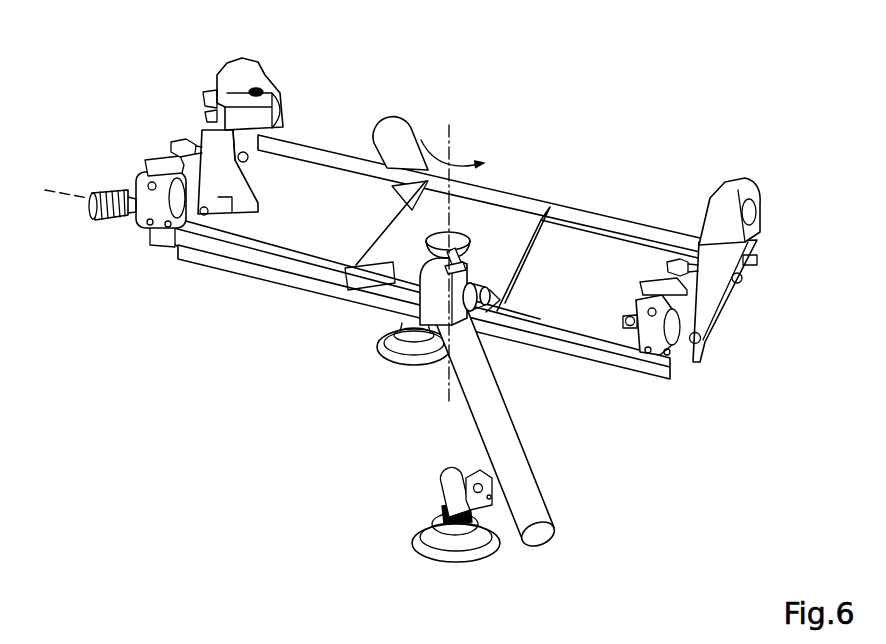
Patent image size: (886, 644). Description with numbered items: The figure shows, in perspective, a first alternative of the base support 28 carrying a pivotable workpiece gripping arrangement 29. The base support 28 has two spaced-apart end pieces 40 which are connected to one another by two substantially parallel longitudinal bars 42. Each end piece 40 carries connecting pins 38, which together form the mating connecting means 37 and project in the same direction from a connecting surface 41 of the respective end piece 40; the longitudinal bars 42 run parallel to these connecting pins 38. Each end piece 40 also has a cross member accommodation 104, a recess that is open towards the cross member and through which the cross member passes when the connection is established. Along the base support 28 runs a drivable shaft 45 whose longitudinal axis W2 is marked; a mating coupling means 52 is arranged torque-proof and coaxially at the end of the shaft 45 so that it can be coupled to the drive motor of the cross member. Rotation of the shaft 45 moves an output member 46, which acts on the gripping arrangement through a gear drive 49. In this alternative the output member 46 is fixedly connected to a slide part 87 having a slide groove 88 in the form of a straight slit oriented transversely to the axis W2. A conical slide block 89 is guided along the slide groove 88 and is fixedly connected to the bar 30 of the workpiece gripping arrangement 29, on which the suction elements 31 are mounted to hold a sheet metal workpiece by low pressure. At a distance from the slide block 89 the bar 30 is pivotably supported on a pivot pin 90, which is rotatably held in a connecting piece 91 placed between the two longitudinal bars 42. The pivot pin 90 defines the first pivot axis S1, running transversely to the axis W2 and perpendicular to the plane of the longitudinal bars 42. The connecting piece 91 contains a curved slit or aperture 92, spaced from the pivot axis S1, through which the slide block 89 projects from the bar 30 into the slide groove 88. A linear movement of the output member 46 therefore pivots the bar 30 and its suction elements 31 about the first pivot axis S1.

The base support 28 is at (740, 135).
The workpiece gripping arrangement 29 is at (512, 567).
The bar 30 is at (512, 438).
The suction elements 31 is at (380, 340).
The mating connecting means 37 is at (97, 113).
The connecting pins 38 is at (130, 193).
The end pieces 40 is at (243, 71).
The connecting surface 41 is at (185, 84).
The longitudinal bars 42 is at (323, 150).
The drivable shaft 45 is at (277, 247).
The output member 46 is at (432, 297).
The gear drive 49 is at (560, 297).
The mating coupling means 52 is at (102, 222).
The slide part 87 is at (488, 293).
The slide groove 88 is at (462, 268).
The slide block 89 is at (473, 262).
The pivot pin 90 is at (434, 239).
The connecting piece 91 is at (507, 200).
The curved slit or aperture 92 is at (387, 263).
The cross member accommodation 104 is at (207, 173).
The first pivot axis S1 is at (453, 143).
The longitudinal axis of the drivable shaft W2 is at (70, 195).